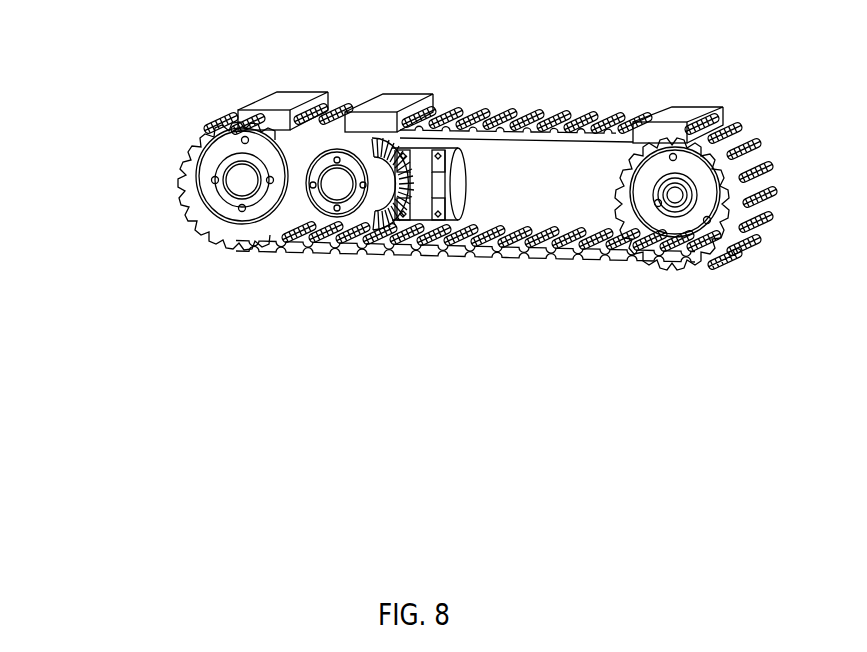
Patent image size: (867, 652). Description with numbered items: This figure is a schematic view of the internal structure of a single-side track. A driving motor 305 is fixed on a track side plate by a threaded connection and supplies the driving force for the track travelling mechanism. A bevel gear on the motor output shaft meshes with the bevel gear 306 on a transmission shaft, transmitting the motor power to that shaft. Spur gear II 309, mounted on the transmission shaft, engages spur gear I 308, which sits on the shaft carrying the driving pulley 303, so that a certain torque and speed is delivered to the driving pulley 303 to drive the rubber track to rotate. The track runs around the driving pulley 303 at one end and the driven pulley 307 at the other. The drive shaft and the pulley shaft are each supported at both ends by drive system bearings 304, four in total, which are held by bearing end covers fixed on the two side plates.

The driving pulley 303 is at (133, 523).
The drive system bearing 304 is at (312, 523).
The driving motor 305 is at (428, 523).
The bevel gear 306 is at (552, 523).
The driven pulley 307 is at (653, 523).
The spur gear I 308 is at (350, 108).
The spur gear II 309 is at (433, 110).